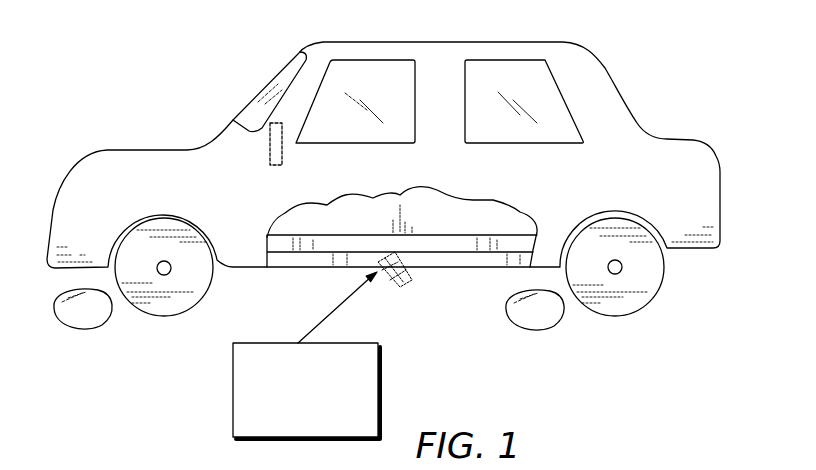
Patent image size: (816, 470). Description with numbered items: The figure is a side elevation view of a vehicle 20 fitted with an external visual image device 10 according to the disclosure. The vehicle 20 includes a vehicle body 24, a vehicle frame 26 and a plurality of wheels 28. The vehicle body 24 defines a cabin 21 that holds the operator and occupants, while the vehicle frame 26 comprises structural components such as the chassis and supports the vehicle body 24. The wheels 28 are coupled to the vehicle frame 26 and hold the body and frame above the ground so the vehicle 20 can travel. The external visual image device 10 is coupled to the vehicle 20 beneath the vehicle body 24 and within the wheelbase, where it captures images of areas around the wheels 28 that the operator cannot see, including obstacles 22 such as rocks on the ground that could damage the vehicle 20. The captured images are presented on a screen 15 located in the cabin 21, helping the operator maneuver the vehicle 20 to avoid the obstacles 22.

The external visual image device 10 is at (378, 377).
The screen 15 is at (268, 158).
The vehicle 20 is at (213, 80).
The cabin 21 is at (357, 85).
The obstacles 22 is at (58, 330).
The vehicle body 24 is at (437, 67).
The vehicle frame 26 is at (447, 255).
The wheels 28 is at (177, 327).